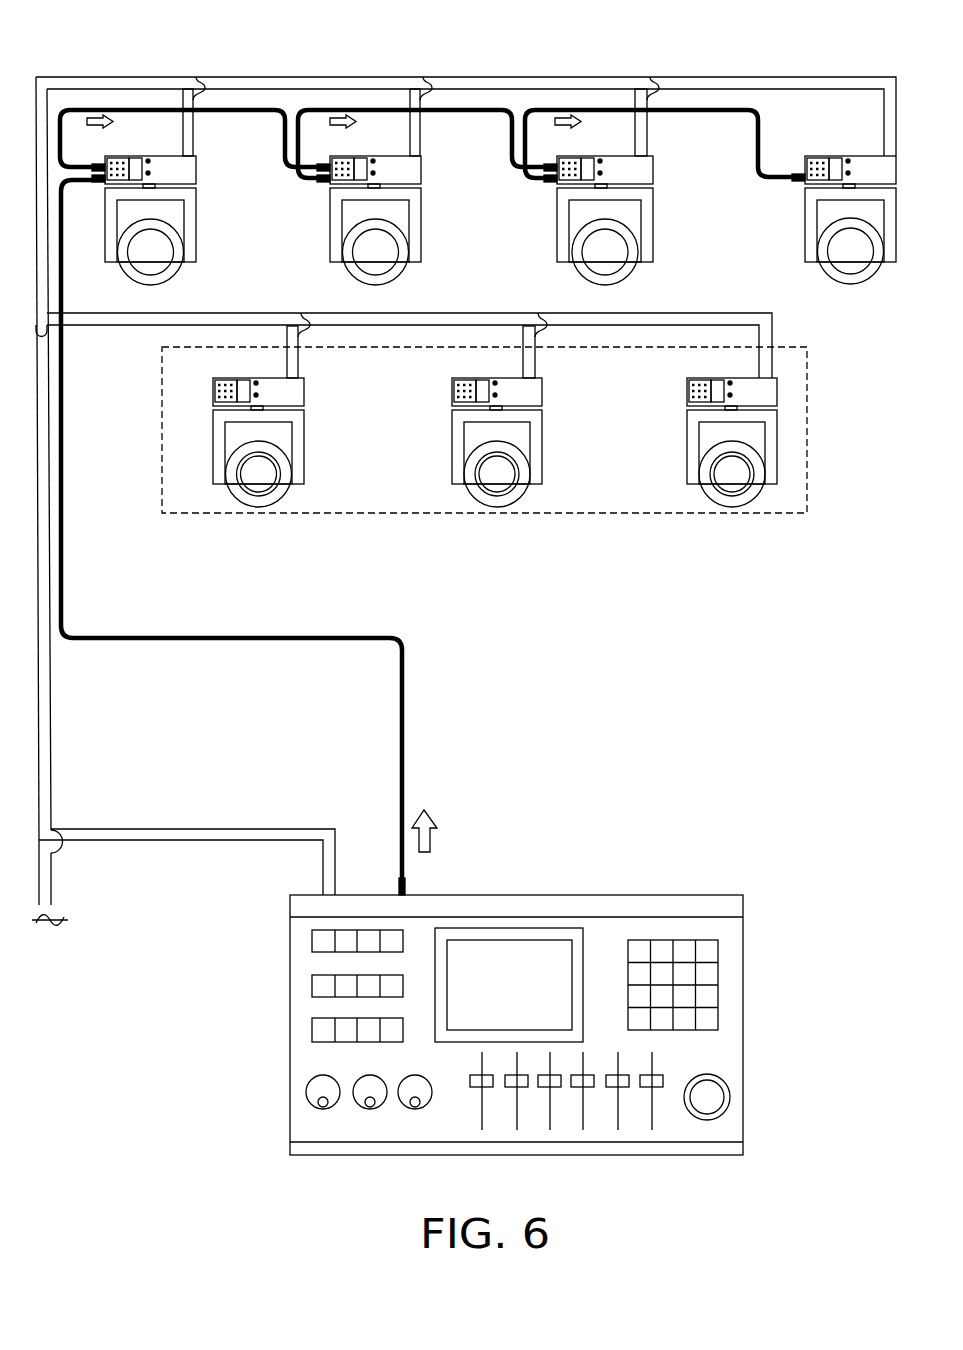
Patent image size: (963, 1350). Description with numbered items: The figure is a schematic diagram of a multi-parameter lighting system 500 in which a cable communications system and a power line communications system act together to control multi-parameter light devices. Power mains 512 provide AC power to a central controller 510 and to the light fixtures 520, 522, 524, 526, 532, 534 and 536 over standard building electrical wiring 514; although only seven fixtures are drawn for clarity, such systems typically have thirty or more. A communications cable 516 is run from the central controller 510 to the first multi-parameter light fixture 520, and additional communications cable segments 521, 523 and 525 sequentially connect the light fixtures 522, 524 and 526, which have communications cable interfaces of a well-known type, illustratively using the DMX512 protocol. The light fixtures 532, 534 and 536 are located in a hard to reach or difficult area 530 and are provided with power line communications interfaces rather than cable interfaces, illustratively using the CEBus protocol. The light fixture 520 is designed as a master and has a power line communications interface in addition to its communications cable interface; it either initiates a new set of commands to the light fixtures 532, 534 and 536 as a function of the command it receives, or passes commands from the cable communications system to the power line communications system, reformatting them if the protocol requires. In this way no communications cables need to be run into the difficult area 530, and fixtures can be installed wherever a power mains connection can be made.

The multi-parameter lighting system 500 is at (100, 68).
The central controller 510 is at (283, 1030).
The power mains 512 is at (60, 895).
The standard building electrical wiring 514 is at (187, 824).
The communications cable 516 is at (390, 727).
The first multi-parameter light fixture 520 is at (196, 245).
The communications cable segment 521 is at (233, 108).
The light fixture 522 is at (329, 247).
The communications cable segment 523 is at (470, 108).
The light fixture 524 is at (556, 244).
The communications cable segment 525 is at (712, 107).
The light fixture 526 is at (804, 247).
The hard to reach or difficult area 530 is at (648, 379).
The light fixture 532 is at (305, 470).
The light fixture 534 is at (451, 457).
The light fixture 536 is at (686, 462).